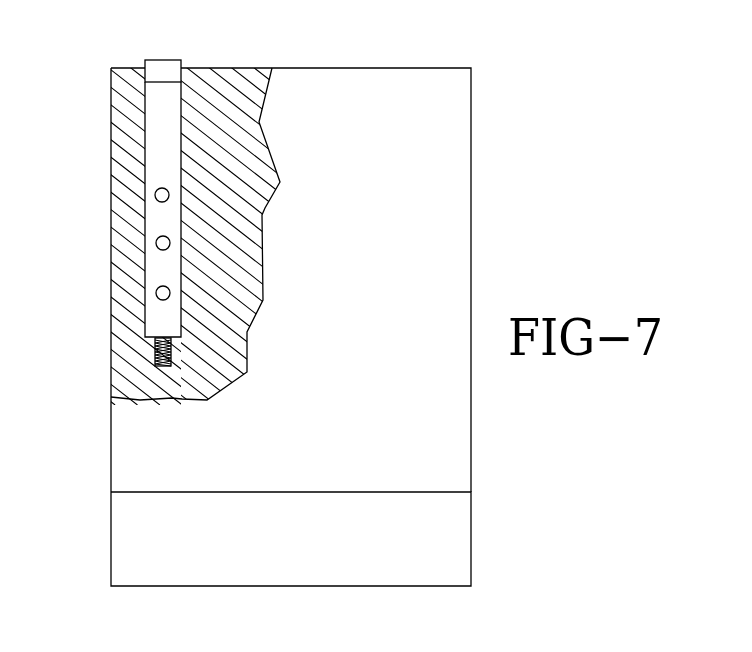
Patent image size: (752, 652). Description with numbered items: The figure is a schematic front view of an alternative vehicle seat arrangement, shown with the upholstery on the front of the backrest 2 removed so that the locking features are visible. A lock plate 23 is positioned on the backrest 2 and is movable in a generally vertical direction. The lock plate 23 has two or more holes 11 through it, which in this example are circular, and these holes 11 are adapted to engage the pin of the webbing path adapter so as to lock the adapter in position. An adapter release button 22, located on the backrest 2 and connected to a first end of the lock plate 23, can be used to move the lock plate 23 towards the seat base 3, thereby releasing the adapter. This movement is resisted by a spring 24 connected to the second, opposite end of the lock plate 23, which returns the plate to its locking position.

The backrest 2 is at (435, 180).
The seat base 3 is at (130, 535).
The holes 11 is at (155, 196).
The adapter release button 22 is at (160, 72).
The lock plate 23 is at (158, 118).
The spring 24 is at (156, 349).